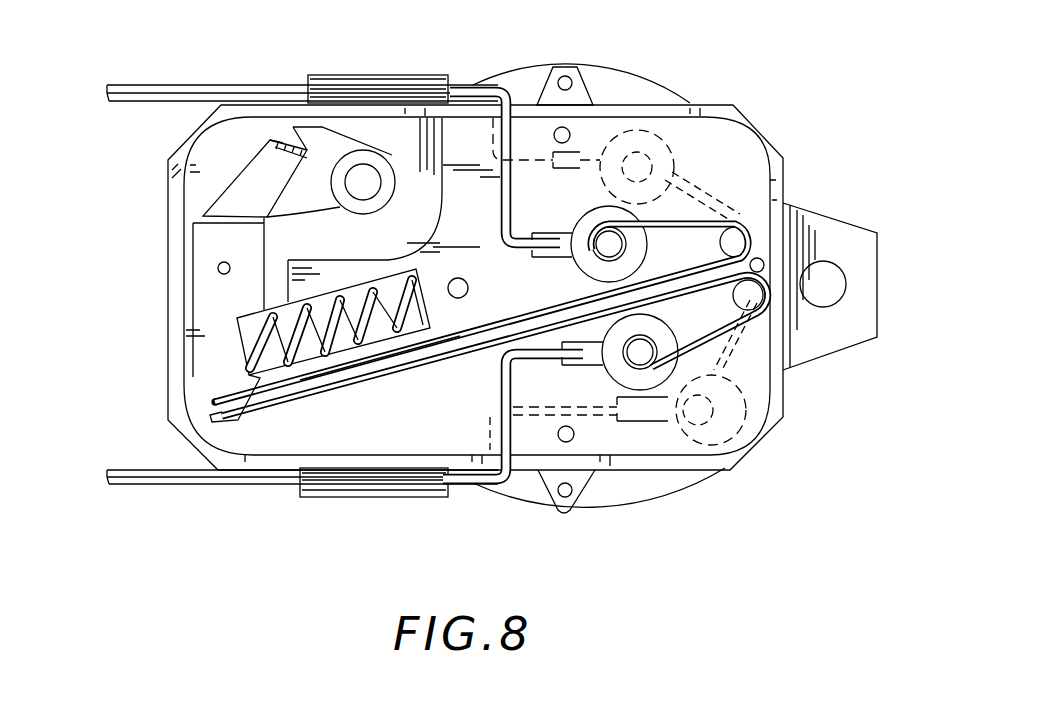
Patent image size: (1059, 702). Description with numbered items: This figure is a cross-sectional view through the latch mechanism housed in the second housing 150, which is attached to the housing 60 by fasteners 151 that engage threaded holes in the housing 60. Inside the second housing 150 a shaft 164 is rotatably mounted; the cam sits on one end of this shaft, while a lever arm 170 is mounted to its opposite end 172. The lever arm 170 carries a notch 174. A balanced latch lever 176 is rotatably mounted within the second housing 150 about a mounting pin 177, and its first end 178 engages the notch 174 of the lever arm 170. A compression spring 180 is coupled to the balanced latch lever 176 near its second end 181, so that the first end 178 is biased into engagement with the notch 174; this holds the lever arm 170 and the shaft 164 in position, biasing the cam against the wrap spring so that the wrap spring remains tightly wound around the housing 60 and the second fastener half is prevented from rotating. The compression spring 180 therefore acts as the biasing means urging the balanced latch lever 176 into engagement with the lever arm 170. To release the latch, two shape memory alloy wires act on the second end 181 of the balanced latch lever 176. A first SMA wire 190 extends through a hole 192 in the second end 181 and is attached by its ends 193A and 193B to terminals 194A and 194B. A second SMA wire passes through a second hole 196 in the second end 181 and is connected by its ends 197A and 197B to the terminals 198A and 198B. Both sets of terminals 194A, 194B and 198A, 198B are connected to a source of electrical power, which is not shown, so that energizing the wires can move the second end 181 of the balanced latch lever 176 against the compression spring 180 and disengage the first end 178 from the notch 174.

The housing 60 is at (600, 52).
The second housing 150 is at (160, 321).
The fasteners 151 is at (556, 128).
The shaft 164 is at (203, 216).
The lever arm 170 is at (356, 150).
The opposite end 172 is at (372, 165).
The notch 174 is at (280, 140).
The balanced latch lever 176 is at (227, 180).
The mounting pin 177 is at (218, 268).
The first end 178 is at (268, 140).
The compression spring 180 is at (307, 352).
The second end 181 is at (193, 363).
The first SMA wire 190 is at (432, 347).
The hole 192 is at (210, 432).
The end of first SMA wire 193A is at (665, 362).
The end of first SMA wire 193B is at (750, 453).
The terminal 194A is at (622, 447).
The terminal 194B is at (676, 445).
The second hole 196 is at (210, 402).
The end of second SMA wire 197A is at (615, 238).
The end of second SMA wire 197B is at (645, 190).
The terminal 198A is at (688, 228).
The terminal 198B is at (662, 130).